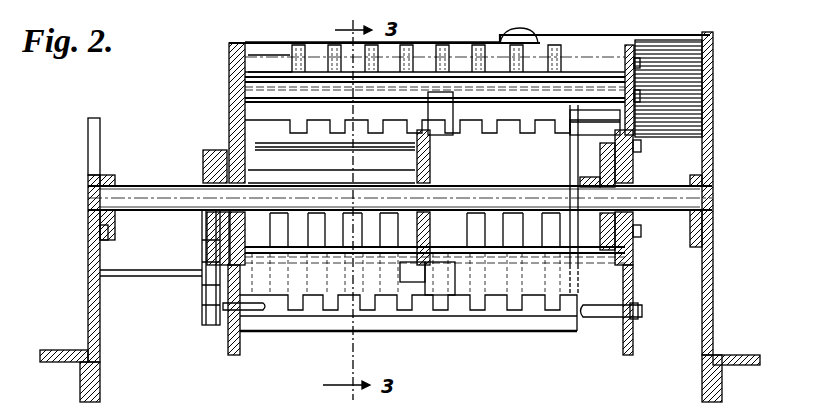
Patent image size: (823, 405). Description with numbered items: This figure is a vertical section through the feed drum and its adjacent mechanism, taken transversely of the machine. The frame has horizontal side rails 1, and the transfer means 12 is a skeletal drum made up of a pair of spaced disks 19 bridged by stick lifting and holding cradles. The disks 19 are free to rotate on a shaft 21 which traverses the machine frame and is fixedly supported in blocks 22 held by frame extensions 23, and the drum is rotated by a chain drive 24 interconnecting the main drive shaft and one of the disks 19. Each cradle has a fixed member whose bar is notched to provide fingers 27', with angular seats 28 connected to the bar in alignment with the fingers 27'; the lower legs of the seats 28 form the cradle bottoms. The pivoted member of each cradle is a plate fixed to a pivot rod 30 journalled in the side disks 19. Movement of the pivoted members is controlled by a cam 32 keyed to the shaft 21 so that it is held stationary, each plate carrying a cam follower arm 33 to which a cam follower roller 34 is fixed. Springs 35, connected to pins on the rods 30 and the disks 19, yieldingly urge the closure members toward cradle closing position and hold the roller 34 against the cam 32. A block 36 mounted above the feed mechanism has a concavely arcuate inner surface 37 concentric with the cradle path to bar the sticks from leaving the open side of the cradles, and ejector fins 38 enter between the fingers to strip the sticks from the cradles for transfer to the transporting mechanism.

The horizontal side rails 1 is at (59, 349).
The transfer means 12 is at (265, 118).
The spaced disks 19 is at (228, 352).
The shaft 21 is at (331, 198).
The blocks 22 is at (115, 229).
The frame extensions 23 is at (88, 296).
The chain drive 24 is at (202, 306).
The fingers 27' is at (435, 77).
The angular seats 28 is at (418, 54).
The pivot rod 30 is at (478, 92).
The cam 32 is at (416, 168).
The cam follower arm 33 is at (450, 130).
The cam follower roller 34 is at (418, 310).
The springs 35 is at (617, 78).
The block 36 is at (681, 33).
The arcuate inner surface 37 is at (503, 30).
The ejector fins 38 is at (312, 242).